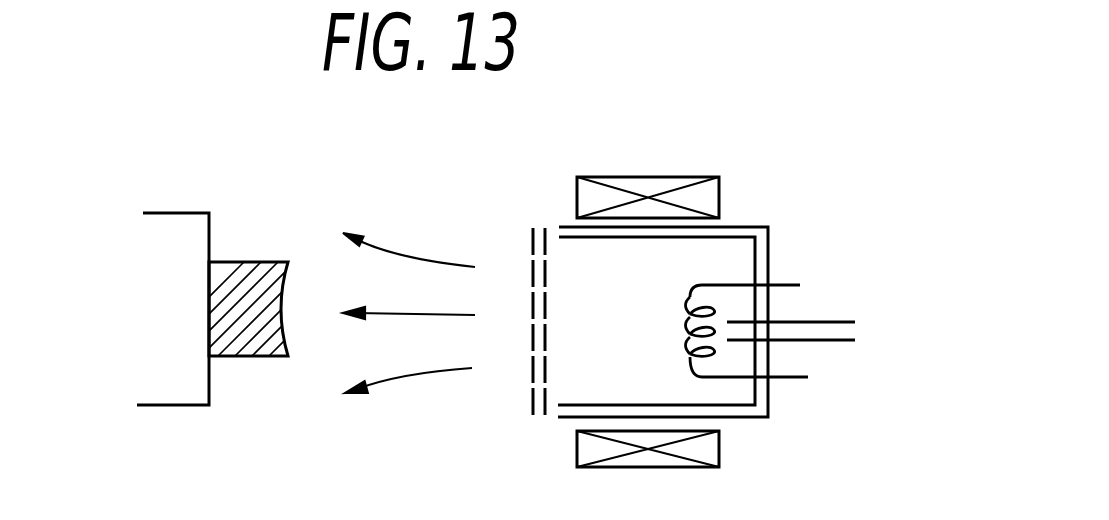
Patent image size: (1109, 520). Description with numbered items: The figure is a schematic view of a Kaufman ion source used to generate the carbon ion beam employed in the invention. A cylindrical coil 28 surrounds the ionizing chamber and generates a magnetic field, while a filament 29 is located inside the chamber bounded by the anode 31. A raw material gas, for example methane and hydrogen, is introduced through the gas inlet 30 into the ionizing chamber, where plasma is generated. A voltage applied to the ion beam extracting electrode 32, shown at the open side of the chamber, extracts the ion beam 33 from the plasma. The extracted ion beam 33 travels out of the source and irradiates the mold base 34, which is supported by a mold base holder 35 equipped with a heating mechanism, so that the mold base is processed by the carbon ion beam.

The cylindrical coil 28 is at (667, 175).
The filament 29 is at (778, 282).
The gas inlet 30 is at (830, 320).
The anode 31 is at (768, 400).
The ion beam extracting electrode 32 is at (532, 400).
The ion beam 33 is at (402, 252).
The mold base 34 is at (242, 357).
The mold base holder 35 is at (168, 333).